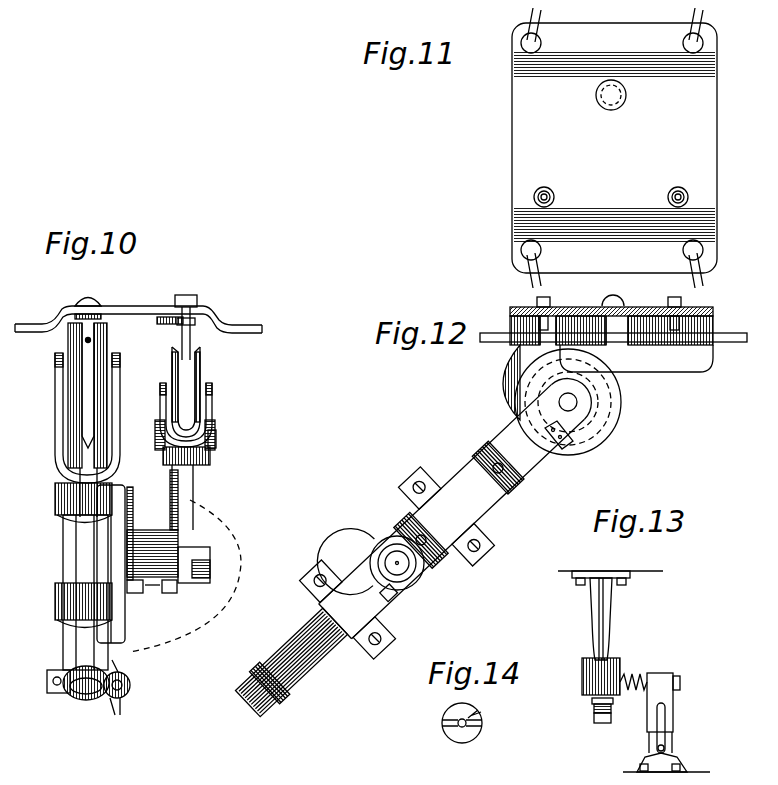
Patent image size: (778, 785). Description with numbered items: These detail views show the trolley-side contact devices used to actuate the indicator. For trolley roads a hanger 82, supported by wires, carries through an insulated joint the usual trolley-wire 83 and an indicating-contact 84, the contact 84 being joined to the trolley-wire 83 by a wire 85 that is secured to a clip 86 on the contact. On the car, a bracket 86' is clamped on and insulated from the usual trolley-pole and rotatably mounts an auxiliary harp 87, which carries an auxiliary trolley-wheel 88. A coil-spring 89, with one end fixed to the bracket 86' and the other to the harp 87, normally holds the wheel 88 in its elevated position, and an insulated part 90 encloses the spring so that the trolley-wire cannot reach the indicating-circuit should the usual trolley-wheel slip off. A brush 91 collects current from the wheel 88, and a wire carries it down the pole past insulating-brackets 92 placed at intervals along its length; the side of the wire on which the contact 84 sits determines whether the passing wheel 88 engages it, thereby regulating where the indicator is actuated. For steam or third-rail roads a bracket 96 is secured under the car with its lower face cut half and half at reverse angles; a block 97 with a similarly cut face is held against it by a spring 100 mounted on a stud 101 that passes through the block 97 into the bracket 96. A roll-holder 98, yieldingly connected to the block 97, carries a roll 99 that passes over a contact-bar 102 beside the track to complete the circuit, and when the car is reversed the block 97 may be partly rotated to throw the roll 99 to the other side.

In FIG. 10, the hanger 82 is at (270, 325).
In FIG. 11, the hanger 82 is at (703, 150).
In FIG. 12, the hanger 82 is at (713, 310).
In FIG. 10, the trolley-wire 83 is at (85, 338).
In FIG. 12, the trolley-wire 83 is at (736, 343).
In FIG. 10, the indicating-contact 84 is at (192, 342).
In FIG. 12, the indicating-contact 84 is at (670, 372).
In FIG. 10, the wire 85 is at (123, 318).
In FIG. 11, the wire 85 is at (604, 110).
In FIG. 10, the clip 86 is at (158, 339).
In FIG. 11, the clip 86 is at (611, 188).
In FIG. 12, the clip 86 is at (588, 308).
In FIG. 10, the bracket 86' is at (135, 567).
In FIG. 12, the bracket 86' is at (370, 565).
In FIG. 10, the auxiliary harp 87 is at (212, 410).
In FIG. 12, the auxiliary harp 87 is at (487, 497).
In FIG. 10, the auxiliary trolley-wheel 88 is at (200, 380).
In FIG. 12, the auxiliary trolley-wheel 88 is at (614, 422).
In FIG. 10, the coil-spring 89 is at (172, 590).
In FIG. 10, the insulated part 90 is at (150, 530).
In FIG. 12, the insulated part 90 is at (495, 458).
In FIG. 10, the brush 91 is at (215, 440).
In FIG. 12, the brush 91 is at (566, 447).
In FIG. 10, the insulating-brackets 92 is at (131, 684).
In FIG. 12, the insulating-brackets 92 is at (282, 688).
In FIG. 13, the bracket 96 is at (603, 620).
In FIG. 13, the block 97 is at (600, 673).
In FIG. 13, the roll-holder 98 is at (673, 708).
In FIG. 13, the roll 99 is at (666, 732).
In FIG. 13, the spring 100 is at (592, 709).
In FIG. 13, the stud 101 is at (602, 724).
In FIG. 13, the contact-bar 102 is at (665, 749).